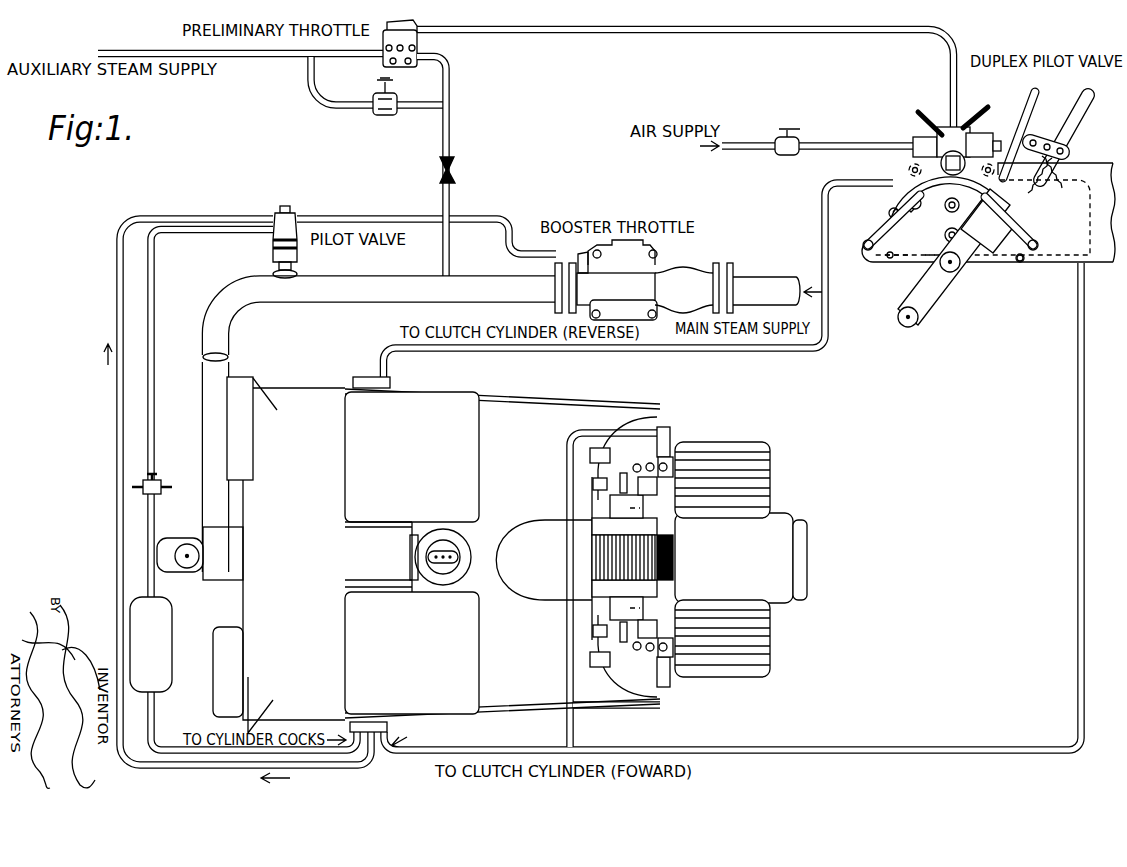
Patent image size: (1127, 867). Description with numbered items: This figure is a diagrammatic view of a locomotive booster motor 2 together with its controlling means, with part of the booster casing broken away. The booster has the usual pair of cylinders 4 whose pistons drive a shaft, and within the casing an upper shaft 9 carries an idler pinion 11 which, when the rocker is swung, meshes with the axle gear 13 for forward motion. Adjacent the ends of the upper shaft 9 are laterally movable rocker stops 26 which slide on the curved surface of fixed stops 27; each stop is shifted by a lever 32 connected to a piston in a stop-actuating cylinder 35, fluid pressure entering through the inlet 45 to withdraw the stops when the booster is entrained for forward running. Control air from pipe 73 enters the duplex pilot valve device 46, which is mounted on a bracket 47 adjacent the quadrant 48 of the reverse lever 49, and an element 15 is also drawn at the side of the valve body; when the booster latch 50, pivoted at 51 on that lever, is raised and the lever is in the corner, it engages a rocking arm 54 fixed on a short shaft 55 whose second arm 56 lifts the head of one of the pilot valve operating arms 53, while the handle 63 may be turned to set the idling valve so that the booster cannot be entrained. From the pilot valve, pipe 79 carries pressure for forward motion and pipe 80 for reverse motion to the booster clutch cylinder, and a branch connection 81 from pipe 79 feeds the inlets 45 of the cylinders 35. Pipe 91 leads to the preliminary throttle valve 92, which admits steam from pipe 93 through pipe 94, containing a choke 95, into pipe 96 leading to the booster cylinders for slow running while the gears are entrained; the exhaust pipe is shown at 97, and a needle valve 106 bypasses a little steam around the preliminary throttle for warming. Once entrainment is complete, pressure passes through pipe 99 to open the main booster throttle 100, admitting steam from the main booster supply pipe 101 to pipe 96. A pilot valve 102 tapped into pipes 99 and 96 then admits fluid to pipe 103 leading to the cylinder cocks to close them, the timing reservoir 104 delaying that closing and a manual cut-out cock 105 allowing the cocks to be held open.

The booster motor 2 is at (431, 554).
The cylinders 4 is at (236, 423).
The upper shaft 9 is at (615, 498).
The idler or pinion 11 is at (610, 551).
The axle gear 13 is at (675, 537).
The valve stem 15 is at (1000, 142).
The movable rocker stops 26 is at (620, 490).
The fixed stops 27 is at (650, 508).
The lever 32 is at (678, 476).
The stop-actuating cylinder 35 is at (667, 442).
The port or inlet 45 is at (651, 428).
The pilot valve device 46 is at (964, 128).
The bracket 47 is at (988, 212).
The quadrant 48 is at (892, 206).
The reverse lever 49 is at (1083, 110).
The booster latch 50 is at (1000, 248).
The pivot 51 is at (990, 258).
The pilot valve operating arms 53 is at (913, 243).
The rocking arm 54 is at (886, 236).
The short shaft 55 is at (866, 252).
The second arm 56 is at (900, 268).
The handle 63 is at (920, 111).
The pipe 73 is at (824, 143).
The pipe 79 is at (1077, 408).
The pipe 80 is at (528, 352).
The branch connection 81 is at (566, 691).
The pipe 91 is at (553, 34).
The preliminary throttle valve 92 is at (418, 40).
The pipe 93 is at (254, 58).
The pipe 94 is at (453, 120).
The choke 95 is at (456, 170).
The pipe 96 is at (349, 302).
The exhaust pipe 97 is at (183, 566).
The pipe 99 is at (377, 214).
The main booster throttle 100 is at (643, 273).
The main booster supply pipe 101 is at (762, 285).
The pilot valve 102 is at (273, 238).
The pipe 103 is at (156, 290).
The timing reservoir 104 is at (151, 644).
The manual cut-out cock 105 is at (160, 480).
The needle valve 106 is at (383, 110).